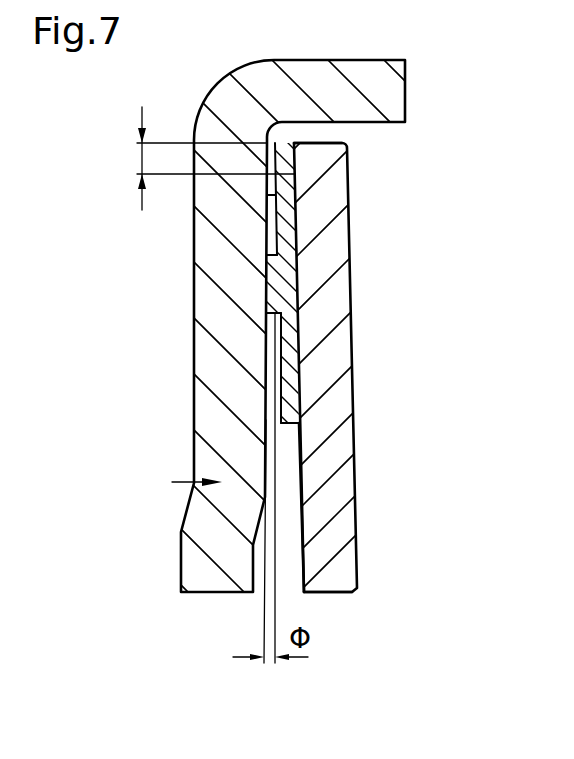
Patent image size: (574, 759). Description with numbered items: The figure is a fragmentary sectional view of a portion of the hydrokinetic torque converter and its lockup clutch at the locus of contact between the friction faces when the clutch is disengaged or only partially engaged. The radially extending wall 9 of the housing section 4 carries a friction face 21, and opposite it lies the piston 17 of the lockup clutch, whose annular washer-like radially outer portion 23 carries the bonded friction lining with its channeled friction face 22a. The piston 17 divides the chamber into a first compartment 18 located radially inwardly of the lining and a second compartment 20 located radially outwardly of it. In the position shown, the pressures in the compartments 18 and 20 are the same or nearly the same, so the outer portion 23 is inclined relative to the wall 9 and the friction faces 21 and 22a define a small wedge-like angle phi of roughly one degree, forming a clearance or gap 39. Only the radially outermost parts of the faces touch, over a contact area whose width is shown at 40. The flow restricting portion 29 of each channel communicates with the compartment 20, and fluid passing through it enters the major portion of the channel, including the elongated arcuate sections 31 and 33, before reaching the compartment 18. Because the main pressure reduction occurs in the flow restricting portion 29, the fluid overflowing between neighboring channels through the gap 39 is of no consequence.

The wall 9 is at (200, 245).
The radially outer portion 23 is at (341, 287).
The second compartment 20 is at (362, 143).
The flow restricting portion 29 is at (294, 174).
The arcuate section 31 is at (268, 230).
The friction face 21 is at (258, 294).
The clearance or gap 39 is at (274, 343).
The friction face 22a is at (272, 386).
The arcuate section 33 is at (295, 409).
The first compartment 18 is at (297, 515).
The piston 17 is at (345, 573).
The width of the area of contact 40 is at (142, 160).
The housing section 4 is at (187, 480).